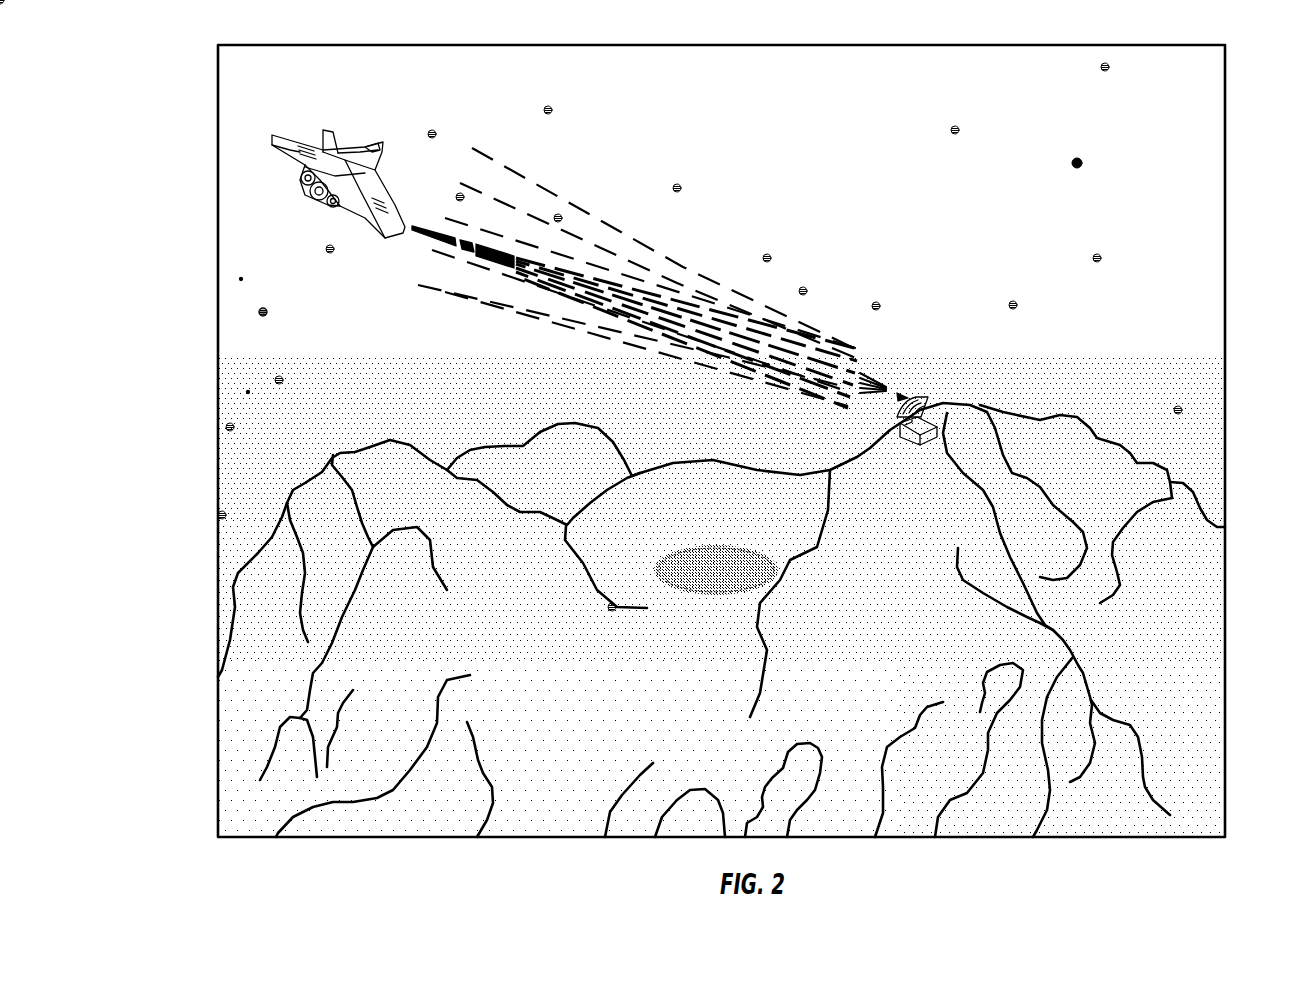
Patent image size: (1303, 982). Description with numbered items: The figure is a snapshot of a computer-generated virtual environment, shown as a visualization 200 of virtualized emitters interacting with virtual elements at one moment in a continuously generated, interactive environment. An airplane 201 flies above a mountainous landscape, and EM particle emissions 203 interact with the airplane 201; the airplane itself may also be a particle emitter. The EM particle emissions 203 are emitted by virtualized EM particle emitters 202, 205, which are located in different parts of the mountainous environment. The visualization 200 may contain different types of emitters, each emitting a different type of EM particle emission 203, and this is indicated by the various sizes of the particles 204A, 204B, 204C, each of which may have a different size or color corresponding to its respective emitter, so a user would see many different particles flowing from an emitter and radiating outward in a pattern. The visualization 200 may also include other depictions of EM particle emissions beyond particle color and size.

The visualization 200 is at (1226, 65).
The airplane 201 is at (291, 133).
The virtualized EM particle emitter 202 is at (918, 396).
The EM particle emissions 203 is at (827, 340).
The particle 204A is at (240, 279).
The particle 204B is at (256, 312).
The particle 204C is at (248, 392).
The virtualized EM particle emitter 205 is at (747, 584).